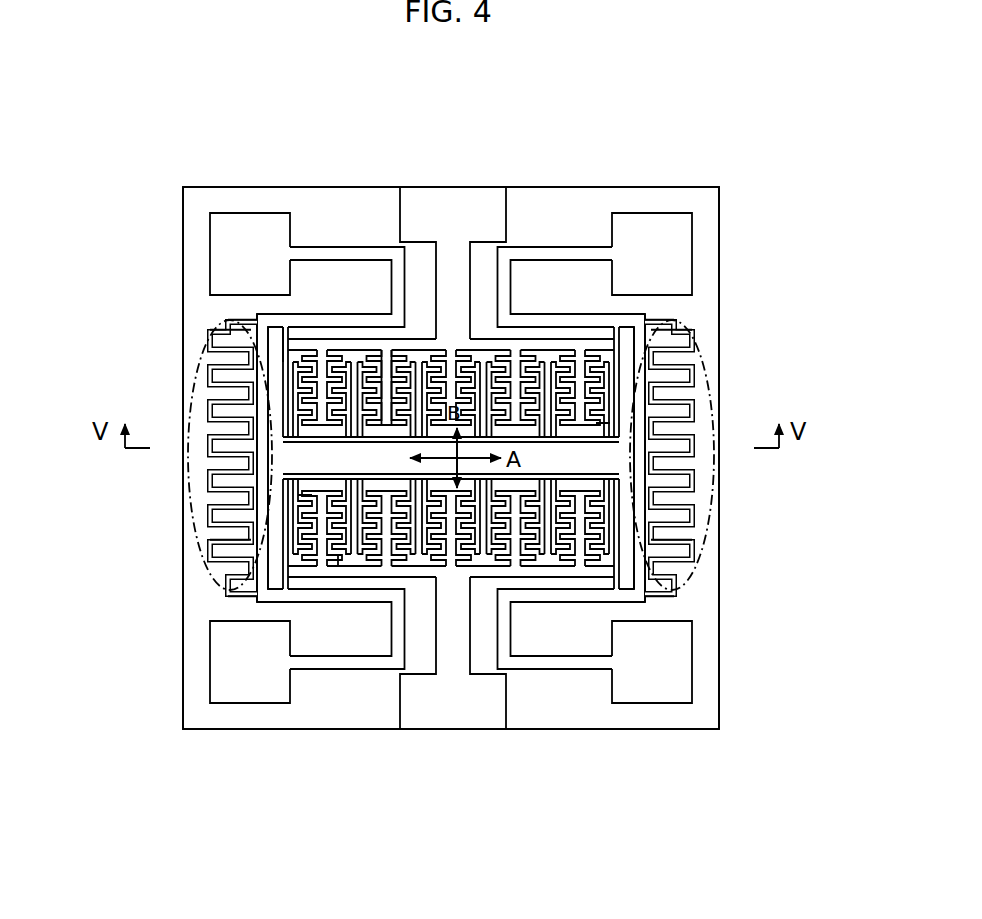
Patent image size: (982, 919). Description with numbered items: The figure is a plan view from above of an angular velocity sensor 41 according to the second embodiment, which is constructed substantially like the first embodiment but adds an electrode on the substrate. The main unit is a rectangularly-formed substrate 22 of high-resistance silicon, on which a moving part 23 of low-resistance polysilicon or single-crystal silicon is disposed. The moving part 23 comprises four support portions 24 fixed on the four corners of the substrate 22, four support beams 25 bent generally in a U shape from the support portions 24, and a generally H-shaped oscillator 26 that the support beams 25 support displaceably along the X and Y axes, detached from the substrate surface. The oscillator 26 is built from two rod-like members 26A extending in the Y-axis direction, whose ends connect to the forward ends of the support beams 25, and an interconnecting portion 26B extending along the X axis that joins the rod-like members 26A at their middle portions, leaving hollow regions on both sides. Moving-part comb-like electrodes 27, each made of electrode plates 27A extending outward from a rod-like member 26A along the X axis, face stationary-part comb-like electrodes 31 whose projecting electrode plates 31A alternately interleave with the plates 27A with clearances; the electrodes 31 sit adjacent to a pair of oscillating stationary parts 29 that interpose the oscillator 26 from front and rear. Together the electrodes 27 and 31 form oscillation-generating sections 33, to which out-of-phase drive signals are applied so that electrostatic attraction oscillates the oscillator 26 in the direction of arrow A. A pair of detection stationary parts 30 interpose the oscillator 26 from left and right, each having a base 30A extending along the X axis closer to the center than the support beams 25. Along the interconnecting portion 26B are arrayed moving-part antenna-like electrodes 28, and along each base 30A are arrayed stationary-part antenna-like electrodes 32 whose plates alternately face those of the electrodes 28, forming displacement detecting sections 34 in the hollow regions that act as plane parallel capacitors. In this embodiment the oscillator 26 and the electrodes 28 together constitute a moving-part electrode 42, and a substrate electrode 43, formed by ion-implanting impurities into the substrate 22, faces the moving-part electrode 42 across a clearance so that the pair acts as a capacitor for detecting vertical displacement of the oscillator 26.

The substrate 22 is at (674, 732).
The moving part 23 is at (316, 238).
The support portion 24 is at (237, 228).
The support beam 25 is at (594, 250).
The oscillator 26 is at (300, 455).
The rod-like member 26A is at (592, 514).
The interconnecting portion 26B is at (602, 432).
The moving-part comb-like electrode 27 is at (237, 316).
The electrode plate 27A is at (221, 341).
The antenna-like electrode 28 is at (416, 350).
The stationary part for oscillation 29 is at (208, 578).
The stationary part for displacement detection 30 is at (462, 205).
The base 30A is at (536, 346).
The stationary-part comb-like electrode 31 is at (225, 597).
The electrode plate 31A is at (217, 538).
The antenna-like electrode 32 is at (296, 489).
The oscillation-generating section 33 is at (190, 403).
The displacement detecting section 34 is at (376, 346).
The angular velocity sensor 41 is at (685, 158).
The moving-part electrode 42 is at (338, 558).
The substrate electrode 43 is at (282, 362).